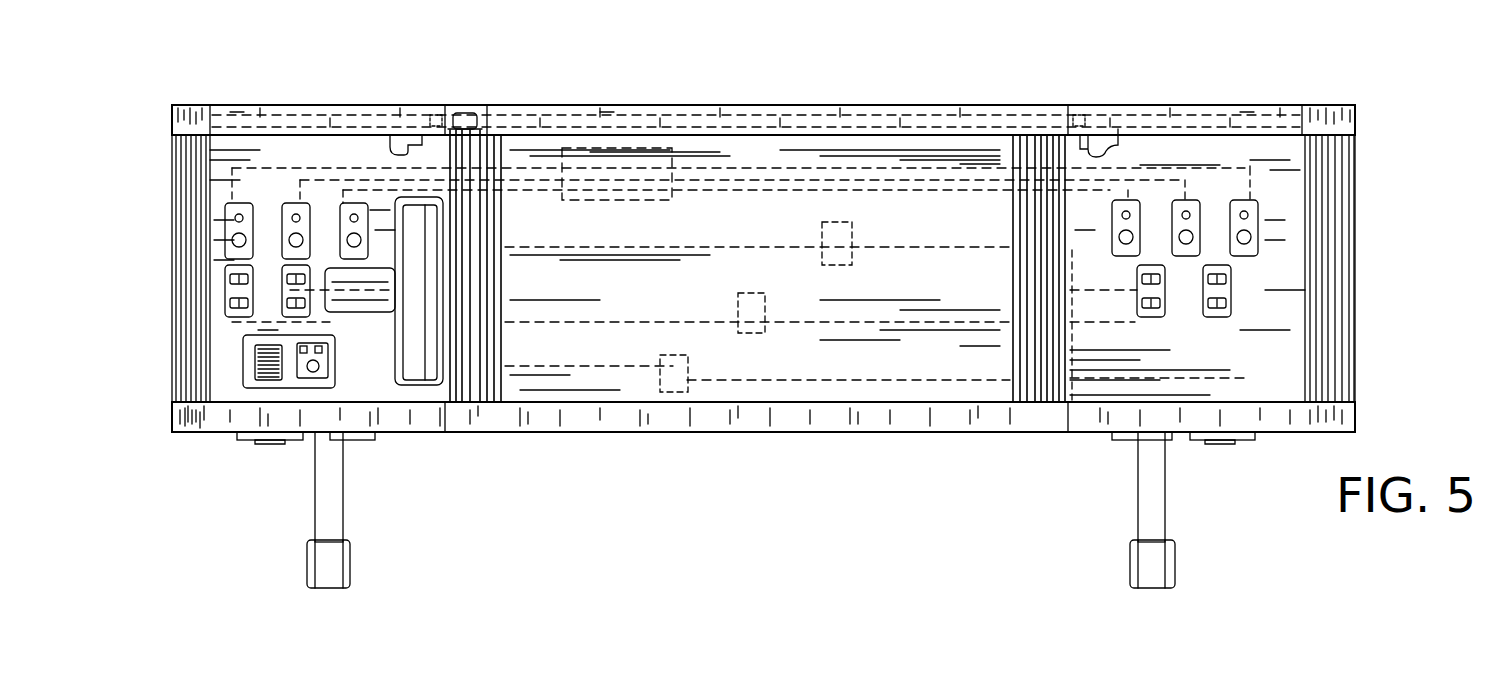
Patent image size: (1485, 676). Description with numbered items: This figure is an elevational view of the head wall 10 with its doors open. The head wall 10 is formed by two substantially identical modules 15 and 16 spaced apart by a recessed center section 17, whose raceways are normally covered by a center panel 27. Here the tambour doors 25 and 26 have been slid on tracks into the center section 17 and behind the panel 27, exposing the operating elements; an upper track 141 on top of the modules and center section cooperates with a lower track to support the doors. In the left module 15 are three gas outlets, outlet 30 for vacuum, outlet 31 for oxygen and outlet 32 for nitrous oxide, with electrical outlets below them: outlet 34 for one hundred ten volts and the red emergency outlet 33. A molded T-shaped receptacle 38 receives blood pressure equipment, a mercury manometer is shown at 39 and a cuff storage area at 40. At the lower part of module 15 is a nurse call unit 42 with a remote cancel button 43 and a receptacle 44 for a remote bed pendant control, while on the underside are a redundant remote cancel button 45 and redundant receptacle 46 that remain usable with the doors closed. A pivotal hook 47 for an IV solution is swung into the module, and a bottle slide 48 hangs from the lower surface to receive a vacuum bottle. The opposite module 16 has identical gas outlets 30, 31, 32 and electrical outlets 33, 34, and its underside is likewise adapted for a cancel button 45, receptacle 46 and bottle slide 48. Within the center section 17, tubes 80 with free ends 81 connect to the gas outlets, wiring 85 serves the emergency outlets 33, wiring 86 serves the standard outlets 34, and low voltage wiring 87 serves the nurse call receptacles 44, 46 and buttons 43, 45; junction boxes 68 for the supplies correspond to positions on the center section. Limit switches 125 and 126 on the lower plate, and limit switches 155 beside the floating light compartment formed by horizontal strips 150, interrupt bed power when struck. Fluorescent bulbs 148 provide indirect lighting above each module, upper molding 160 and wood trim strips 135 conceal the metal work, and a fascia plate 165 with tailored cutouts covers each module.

The head wall 10 is at (604, 588).
The left module 15 is at (302, 88).
The right module 16 is at (1201, 66).
The center section 17 is at (818, 440).
The tambour door 25 is at (505, 150).
The tambour door 26 is at (1025, 165).
The center panel 27 is at (726, 270).
The gas outlet 30 is at (340, 212).
The gas outlet 31 is at (288, 204).
The gas outlet 32 is at (225, 228).
The emergency electrical outlet 33 is at (282, 292).
The electrical outlet 34 is at (228, 290).
The T-shaped receptacle 38 is at (430, 388).
The mercury manometer 39 is at (412, 385).
The cuff storage area 40 is at (360, 318).
The nurse call unit 42 is at (245, 362).
The remote cancel button 43 is at (297, 335).
The receptacle 44 is at (313, 366).
The redundant remote cancel button 45 is at (294, 442).
The redundant receptacle 46 is at (362, 442).
The pivotal hook 47 is at (392, 130).
The bottle slide 48 is at (307, 574).
The junction box 68 is at (838, 272).
The tube 80 is at (342, 176).
The free end 81 is at (674, 162).
The electrical wiring 85 is at (580, 256).
The wiring 86 is at (510, 326).
The wiring 87 is at (582, 370).
The limit switch 125 is at (470, 436).
The limit switch 126 is at (1058, 434).
The wood trim strip 135 is at (232, 432).
The upper tambour door track 141 is at (480, 130).
The fluorescent bulb 148 is at (333, 106).
The horizontal strip 150 is at (466, 113).
The limit switch 155 is at (434, 112).
The upper molding 160 is at (572, 106).
The fascia plate 165 is at (176, 392).